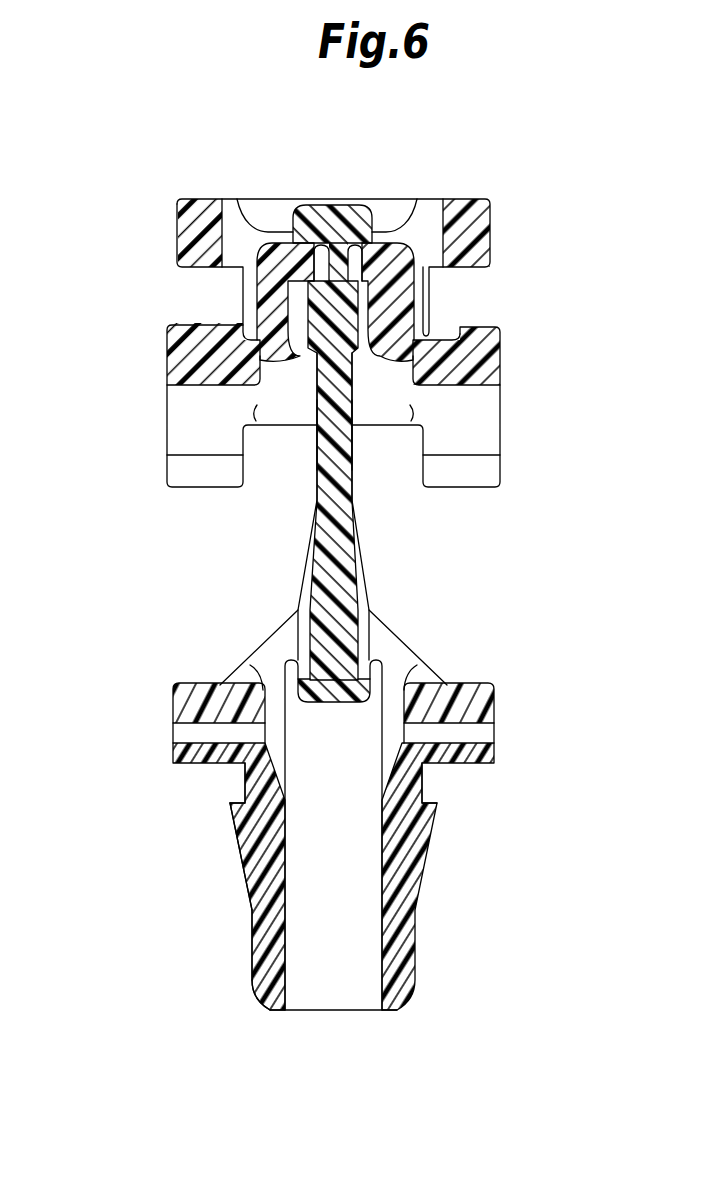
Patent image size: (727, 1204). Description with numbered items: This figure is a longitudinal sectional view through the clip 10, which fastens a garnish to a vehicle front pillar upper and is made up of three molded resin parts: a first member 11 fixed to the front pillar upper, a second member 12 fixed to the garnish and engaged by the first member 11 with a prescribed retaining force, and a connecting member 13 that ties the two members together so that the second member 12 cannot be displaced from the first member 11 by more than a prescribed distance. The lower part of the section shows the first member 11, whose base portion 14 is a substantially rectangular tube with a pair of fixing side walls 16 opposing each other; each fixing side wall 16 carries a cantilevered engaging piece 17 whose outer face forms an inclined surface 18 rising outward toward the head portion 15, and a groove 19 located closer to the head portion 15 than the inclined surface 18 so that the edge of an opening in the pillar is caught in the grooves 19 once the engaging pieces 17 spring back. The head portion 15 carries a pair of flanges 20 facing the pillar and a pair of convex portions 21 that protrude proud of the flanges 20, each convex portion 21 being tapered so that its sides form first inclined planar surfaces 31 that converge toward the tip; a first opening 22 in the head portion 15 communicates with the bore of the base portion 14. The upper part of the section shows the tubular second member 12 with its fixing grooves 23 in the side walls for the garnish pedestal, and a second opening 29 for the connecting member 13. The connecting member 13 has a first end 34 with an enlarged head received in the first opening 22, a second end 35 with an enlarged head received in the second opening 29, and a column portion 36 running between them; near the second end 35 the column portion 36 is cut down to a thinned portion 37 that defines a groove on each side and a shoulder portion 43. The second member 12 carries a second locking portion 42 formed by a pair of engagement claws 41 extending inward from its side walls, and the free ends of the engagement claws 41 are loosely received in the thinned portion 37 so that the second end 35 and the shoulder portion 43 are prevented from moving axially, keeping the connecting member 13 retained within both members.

The clip 10 is at (482, 122).
The first member 11 is at (503, 699).
The second member 12 is at (496, 222).
The connecting member 13 is at (360, 528).
The base portion 14 is at (252, 973).
The head portion 15 is at (102, 640).
The fixing side wall 16 is at (267, 990).
The engaging piece 17 is at (238, 888).
The inclined surface 18 is at (242, 862).
The groove 19 is at (237, 789).
The flange 20 is at (195, 708).
The convex portion 21 is at (265, 647).
The first opening 22 is at (393, 655).
The fixing groove 23 is at (200, 268).
The second opening 29 is at (288, 420).
The first inclined planar surface 31 is at (277, 625).
The first end 34 is at (337, 702).
The second end 35 is at (323, 212).
The column portion 36 is at (344, 466).
The thinned portion 37 is at (328, 268).
The engagement claw 41 is at (405, 317).
The second locking portion 42 is at (563, 300).
The shoulder portion 43 is at (383, 260).